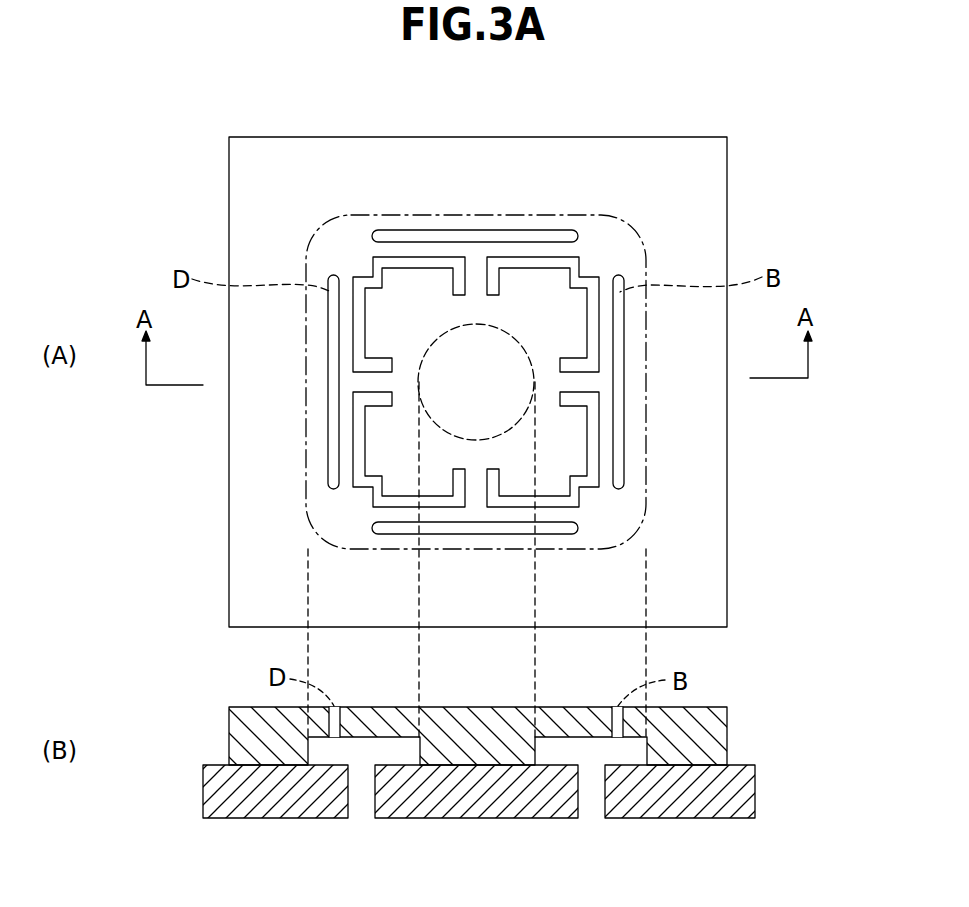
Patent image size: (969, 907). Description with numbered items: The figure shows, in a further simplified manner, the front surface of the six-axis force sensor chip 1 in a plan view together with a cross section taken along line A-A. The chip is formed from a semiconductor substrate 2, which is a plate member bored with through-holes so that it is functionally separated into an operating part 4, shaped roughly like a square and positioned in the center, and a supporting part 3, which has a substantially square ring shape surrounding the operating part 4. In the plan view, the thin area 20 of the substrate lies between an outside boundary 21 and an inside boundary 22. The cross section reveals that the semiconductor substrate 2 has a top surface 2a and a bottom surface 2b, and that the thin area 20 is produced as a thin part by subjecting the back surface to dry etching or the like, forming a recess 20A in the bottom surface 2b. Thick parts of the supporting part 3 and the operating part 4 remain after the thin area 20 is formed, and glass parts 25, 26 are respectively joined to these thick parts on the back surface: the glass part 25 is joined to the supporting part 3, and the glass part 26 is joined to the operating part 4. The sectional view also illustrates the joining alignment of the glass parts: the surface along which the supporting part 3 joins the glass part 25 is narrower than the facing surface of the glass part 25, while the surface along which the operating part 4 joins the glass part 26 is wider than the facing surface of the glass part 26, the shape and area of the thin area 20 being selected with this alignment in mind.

The six-axis force sensor chip 1 is at (606, 139).
The semiconductor substrate 2 is at (729, 155).
The supporting part 3 is at (705, 218).
The operating part 4 is at (500, 392).
The thin area 20 is at (596, 489).
The outside boundary 21 is at (450, 215).
The inside boundary 22 is at (438, 334).
The top surface 2a is at (700, 707).
The bottom surface 2b is at (697, 766).
The glass part 25 is at (265, 818).
The glass part 26 is at (450, 818).
The recess 20A is at (550, 752).